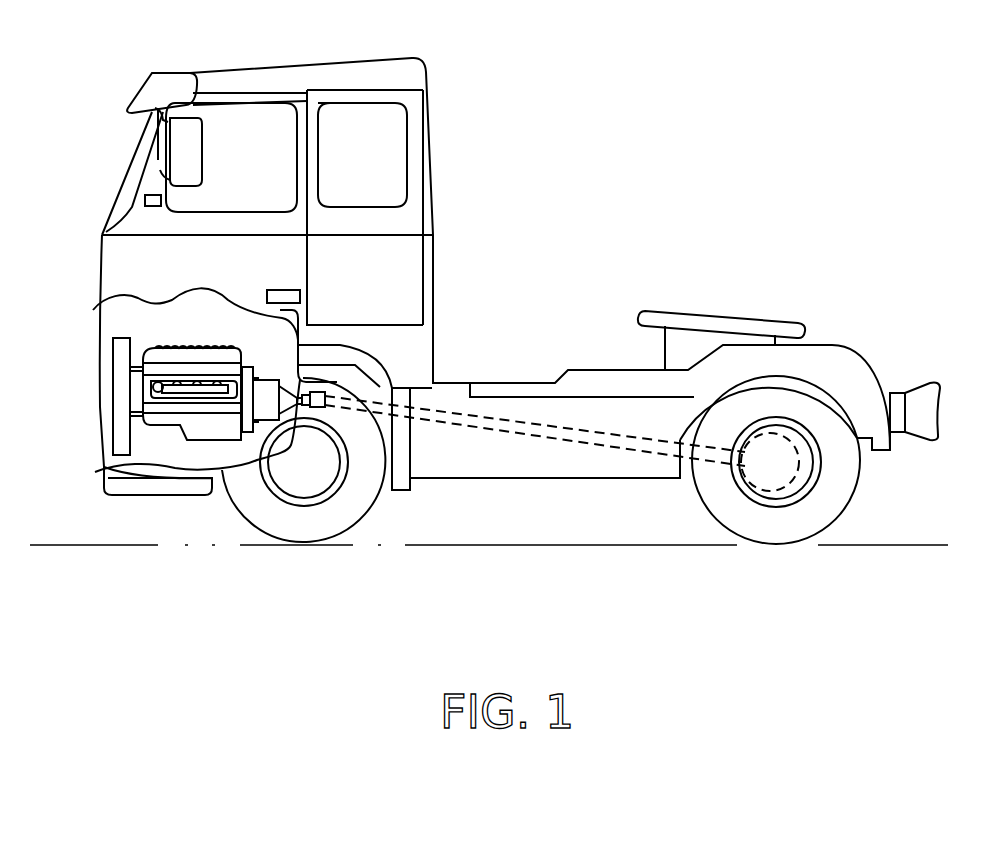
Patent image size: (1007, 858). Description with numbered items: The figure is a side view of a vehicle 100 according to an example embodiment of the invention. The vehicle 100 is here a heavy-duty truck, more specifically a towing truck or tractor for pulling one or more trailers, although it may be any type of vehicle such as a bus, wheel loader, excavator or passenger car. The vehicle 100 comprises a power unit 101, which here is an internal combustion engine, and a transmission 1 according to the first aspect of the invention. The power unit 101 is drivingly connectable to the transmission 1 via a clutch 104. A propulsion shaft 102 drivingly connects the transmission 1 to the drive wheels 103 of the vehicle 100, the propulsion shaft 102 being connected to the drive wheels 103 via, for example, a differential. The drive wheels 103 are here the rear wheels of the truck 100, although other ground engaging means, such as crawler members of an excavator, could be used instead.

The vehicle 100 is at (553, 82).
The transmission 1 is at (267, 400).
The power unit 101 is at (197, 392).
The propulsion shaft 102 is at (493, 417).
The drive wheels 103 is at (775, 522).
The clutch 104 is at (249, 360).